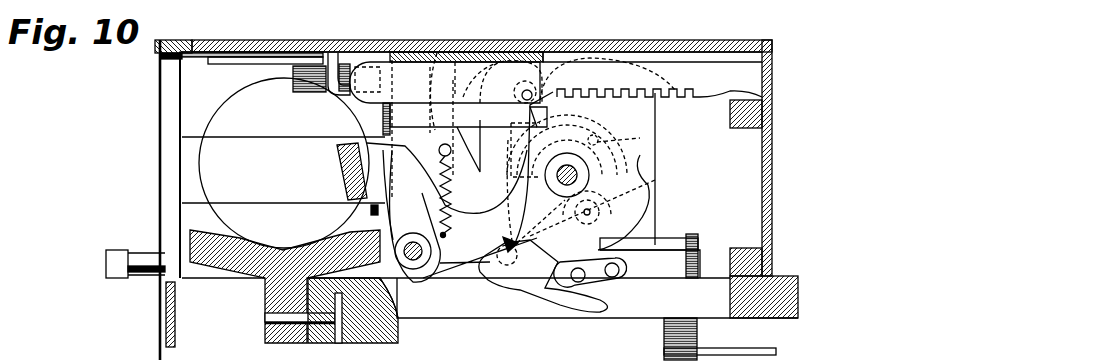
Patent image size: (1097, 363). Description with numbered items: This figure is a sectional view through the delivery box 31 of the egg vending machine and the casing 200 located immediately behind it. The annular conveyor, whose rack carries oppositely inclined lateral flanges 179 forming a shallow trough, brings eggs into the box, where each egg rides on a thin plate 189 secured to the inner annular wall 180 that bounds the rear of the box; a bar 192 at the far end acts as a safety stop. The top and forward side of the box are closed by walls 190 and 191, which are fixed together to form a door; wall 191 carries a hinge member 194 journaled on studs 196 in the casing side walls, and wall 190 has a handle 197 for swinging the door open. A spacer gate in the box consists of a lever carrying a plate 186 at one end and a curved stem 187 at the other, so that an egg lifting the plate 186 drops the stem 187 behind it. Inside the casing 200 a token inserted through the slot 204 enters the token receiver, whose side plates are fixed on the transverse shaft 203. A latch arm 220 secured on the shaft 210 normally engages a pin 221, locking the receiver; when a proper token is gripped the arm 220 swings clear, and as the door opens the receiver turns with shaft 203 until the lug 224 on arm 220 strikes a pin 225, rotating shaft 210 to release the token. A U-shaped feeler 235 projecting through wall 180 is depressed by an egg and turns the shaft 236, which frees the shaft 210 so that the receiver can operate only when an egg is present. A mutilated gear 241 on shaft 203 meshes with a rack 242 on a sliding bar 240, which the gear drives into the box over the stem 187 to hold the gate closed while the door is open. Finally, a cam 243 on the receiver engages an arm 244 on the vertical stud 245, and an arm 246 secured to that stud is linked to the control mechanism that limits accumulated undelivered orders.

The delivery box 31 is at (146, 96).
The wall 191 is at (280, 43).
The slot 204 is at (495, 50).
The casing 200 is at (669, 42).
The bar 240 is at (732, 68).
The stem 187 is at (230, 60).
The plate 186 is at (292, 86).
The studs 196 is at (511, 82).
The pin 225 is at (548, 84).
The rack 242 is at (668, 90).
The bar 192 is at (267, 150).
The inner annular wall 180 is at (383, 117).
The hinge member 194 is at (438, 150).
The cam 243 is at (620, 140).
The transverse shaft 203 is at (578, 177).
The mutilated gear 241 is at (652, 163).
The wall 190 is at (160, 170).
The feeler 235 is at (340, 168).
The shaft 210 is at (596, 206).
The handle 197 is at (148, 222).
The thin plate 189 is at (234, 240).
The pin 221 is at (503, 245).
The arm 244 is at (645, 240).
The vertical stud 245 is at (690, 234).
The lateral flanges 179 is at (250, 262).
The shaft 236 is at (414, 262).
The latch arm 220 is at (490, 276).
The lug 224 is at (602, 284).
The arm 246 is at (752, 350).